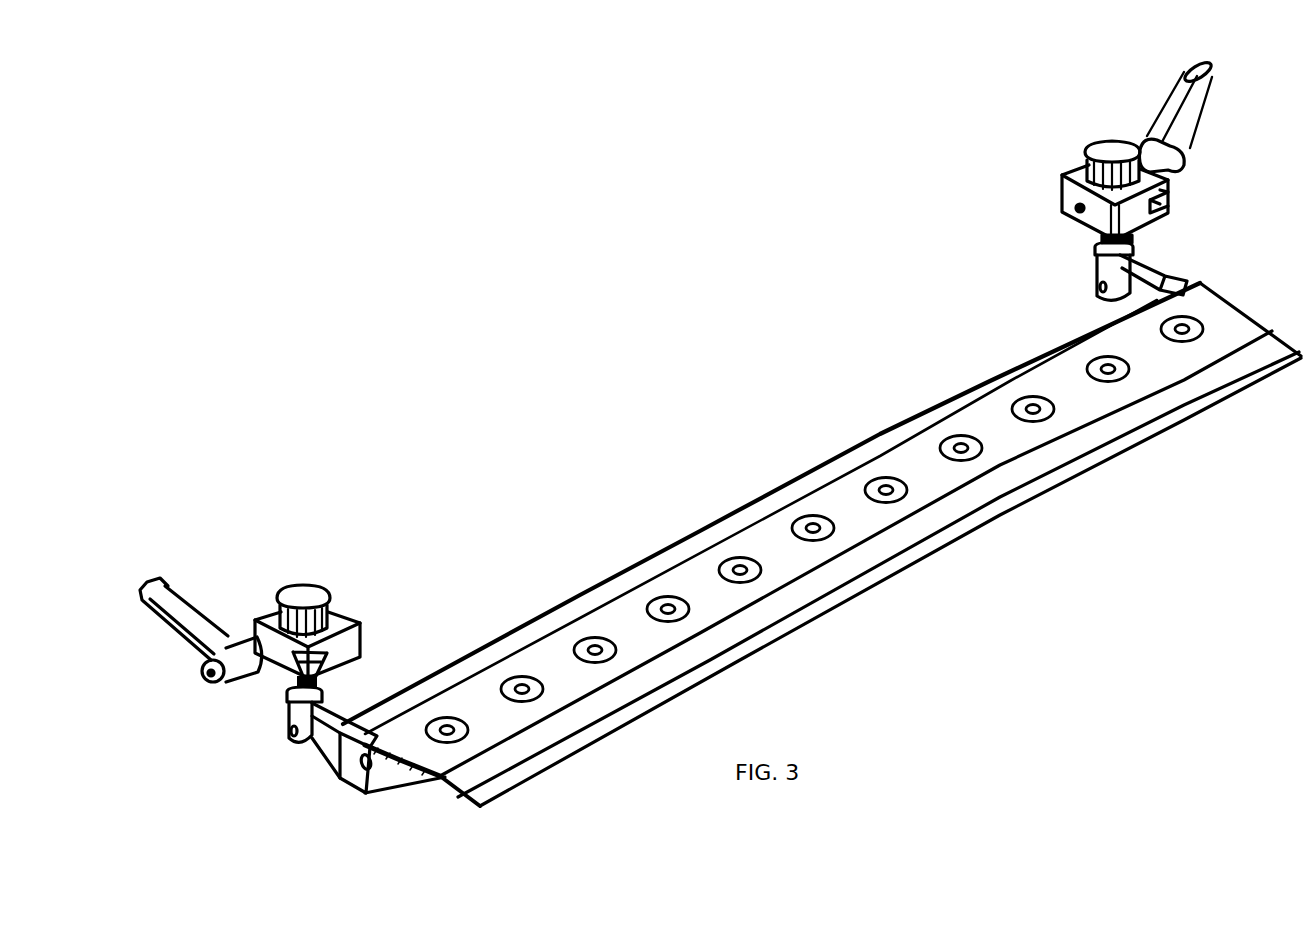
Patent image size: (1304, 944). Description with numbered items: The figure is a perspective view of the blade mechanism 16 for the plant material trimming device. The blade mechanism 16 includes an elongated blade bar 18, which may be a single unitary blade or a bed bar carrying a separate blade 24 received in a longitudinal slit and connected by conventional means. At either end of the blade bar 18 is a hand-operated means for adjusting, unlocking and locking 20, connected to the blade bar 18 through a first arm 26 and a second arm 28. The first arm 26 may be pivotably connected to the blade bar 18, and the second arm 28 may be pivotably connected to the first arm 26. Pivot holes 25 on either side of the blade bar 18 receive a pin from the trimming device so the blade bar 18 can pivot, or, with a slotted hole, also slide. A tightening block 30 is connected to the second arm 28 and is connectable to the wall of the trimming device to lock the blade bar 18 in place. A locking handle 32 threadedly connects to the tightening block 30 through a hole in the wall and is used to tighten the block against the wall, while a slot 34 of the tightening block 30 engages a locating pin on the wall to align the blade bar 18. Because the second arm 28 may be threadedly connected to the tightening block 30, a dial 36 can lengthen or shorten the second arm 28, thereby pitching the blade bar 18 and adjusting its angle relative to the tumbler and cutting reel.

The blade mechanism 16 is at (401, 116).
The blade bar 18 is at (733, 480).
The hand-operated means for adjusting, unlocking and locking 20 is at (354, 562).
The blade 24 is at (331, 691).
The pivot holes 25 is at (373, 770).
The first arm 26 is at (327, 743).
The second arm 28 is at (1102, 267).
The tightening block 30 is at (352, 640).
The locking handle 32 is at (181, 600).
The slot 34 is at (293, 673).
The dial 36 is at (291, 583).